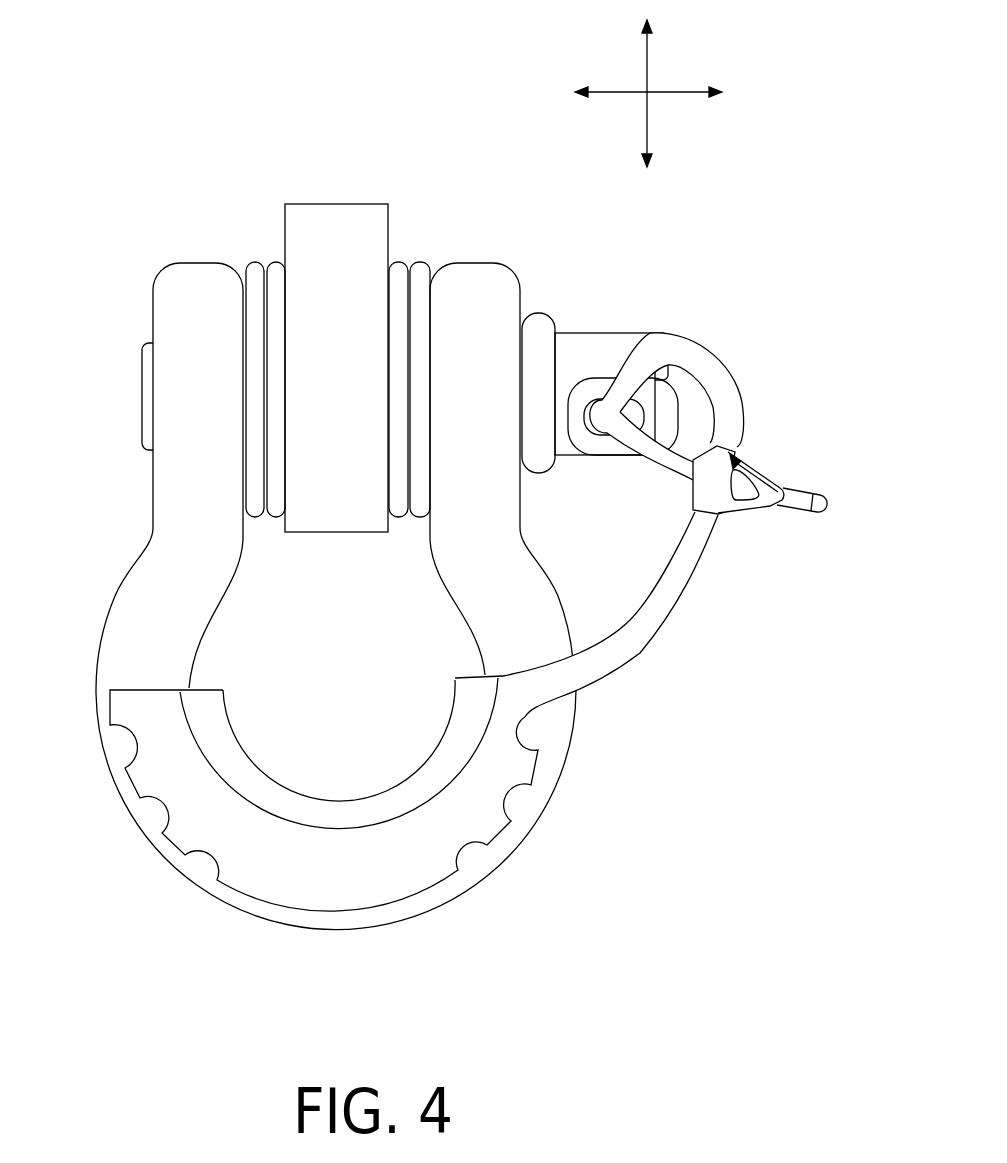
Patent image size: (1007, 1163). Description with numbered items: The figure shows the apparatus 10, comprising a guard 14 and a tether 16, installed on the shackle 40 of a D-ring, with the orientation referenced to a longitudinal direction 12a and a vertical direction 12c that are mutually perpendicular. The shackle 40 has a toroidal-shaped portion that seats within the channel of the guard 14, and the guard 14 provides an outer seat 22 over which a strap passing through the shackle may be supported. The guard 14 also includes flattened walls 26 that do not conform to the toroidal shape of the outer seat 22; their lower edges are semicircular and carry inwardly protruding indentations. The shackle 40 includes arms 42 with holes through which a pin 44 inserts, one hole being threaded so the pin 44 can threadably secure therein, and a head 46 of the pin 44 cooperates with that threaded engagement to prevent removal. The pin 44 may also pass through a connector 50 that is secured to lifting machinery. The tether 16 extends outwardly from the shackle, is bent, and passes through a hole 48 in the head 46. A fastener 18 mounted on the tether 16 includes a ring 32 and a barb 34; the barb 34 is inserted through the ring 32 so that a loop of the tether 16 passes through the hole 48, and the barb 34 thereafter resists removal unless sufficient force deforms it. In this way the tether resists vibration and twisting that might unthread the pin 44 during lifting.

The apparatus 10 is at (360, 548).
The longitudinal direction 12a is at (697, 95).
The vertical direction 12c is at (648, 67).
The guard 14 is at (313, 710).
The tether 16 is at (689, 629).
The fastener 18 is at (787, 469).
The outer seat 22 is at (313, 798).
The flattened walls 26 is at (337, 865).
The ring 32 is at (697, 483).
The barb 34 is at (768, 507).
The shackle 40 is at (308, 565).
The arms 42 is at (203, 323).
The pin 44 is at (140, 410).
The head 46 is at (538, 332).
The hole 48 is at (603, 400).
The connector 50 is at (325, 252).